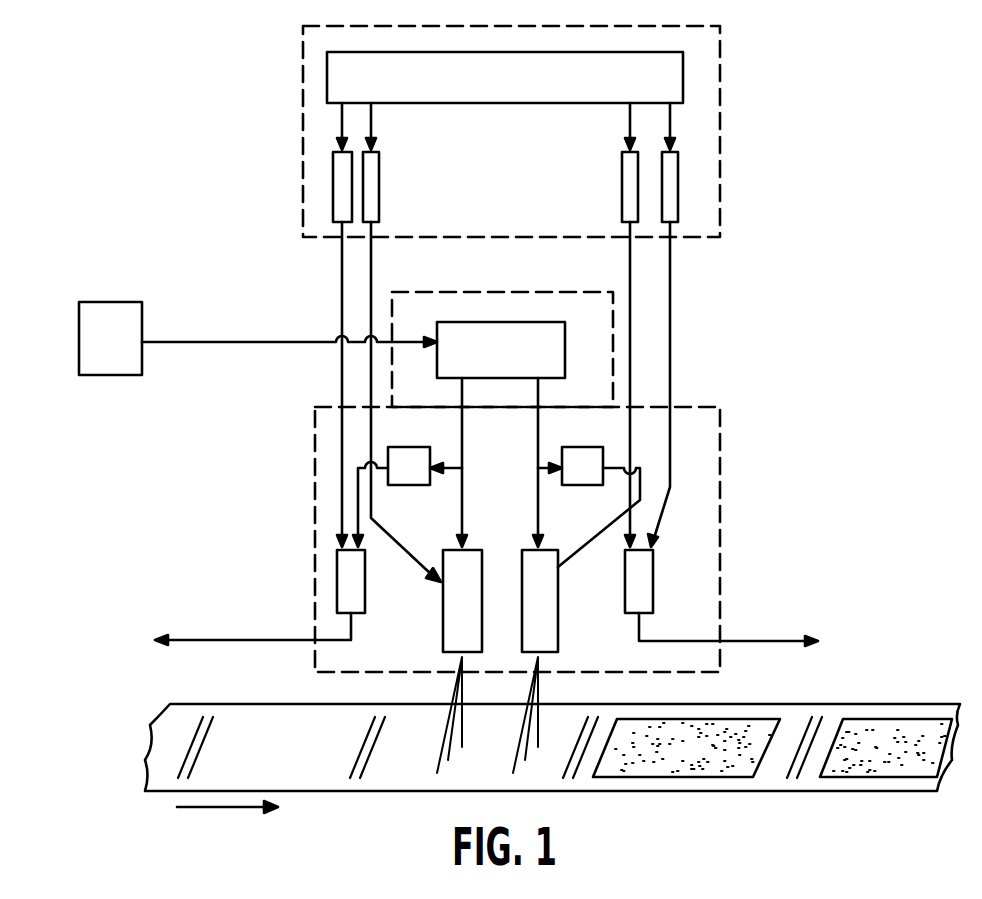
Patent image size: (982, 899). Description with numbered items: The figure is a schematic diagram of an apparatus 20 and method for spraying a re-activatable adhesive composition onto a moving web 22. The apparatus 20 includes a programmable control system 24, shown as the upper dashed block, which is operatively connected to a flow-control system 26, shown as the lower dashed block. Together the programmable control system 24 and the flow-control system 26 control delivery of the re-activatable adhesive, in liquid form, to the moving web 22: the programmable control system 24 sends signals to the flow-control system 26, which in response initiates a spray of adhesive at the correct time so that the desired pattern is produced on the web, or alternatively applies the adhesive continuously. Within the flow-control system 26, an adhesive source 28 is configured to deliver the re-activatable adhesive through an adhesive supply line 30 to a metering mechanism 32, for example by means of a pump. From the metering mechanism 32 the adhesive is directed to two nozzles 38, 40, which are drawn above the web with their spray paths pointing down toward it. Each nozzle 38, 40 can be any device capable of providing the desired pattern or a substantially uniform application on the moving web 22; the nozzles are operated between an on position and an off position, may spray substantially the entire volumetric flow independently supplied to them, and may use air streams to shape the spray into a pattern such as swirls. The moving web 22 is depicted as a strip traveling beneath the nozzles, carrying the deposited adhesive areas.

The apparatus 20 is at (203, 108).
The moving web 22 is at (863, 792).
The programmable control system 24 is at (720, 29).
The flow-control system 26 is at (720, 408).
The adhesive source 28 is at (97, 313).
The adhesive supply line 30 is at (235, 340).
The metering mechanism 32 is at (527, 320).
The nozzle 38 is at (443, 623).
The nozzle 40 is at (558, 625).